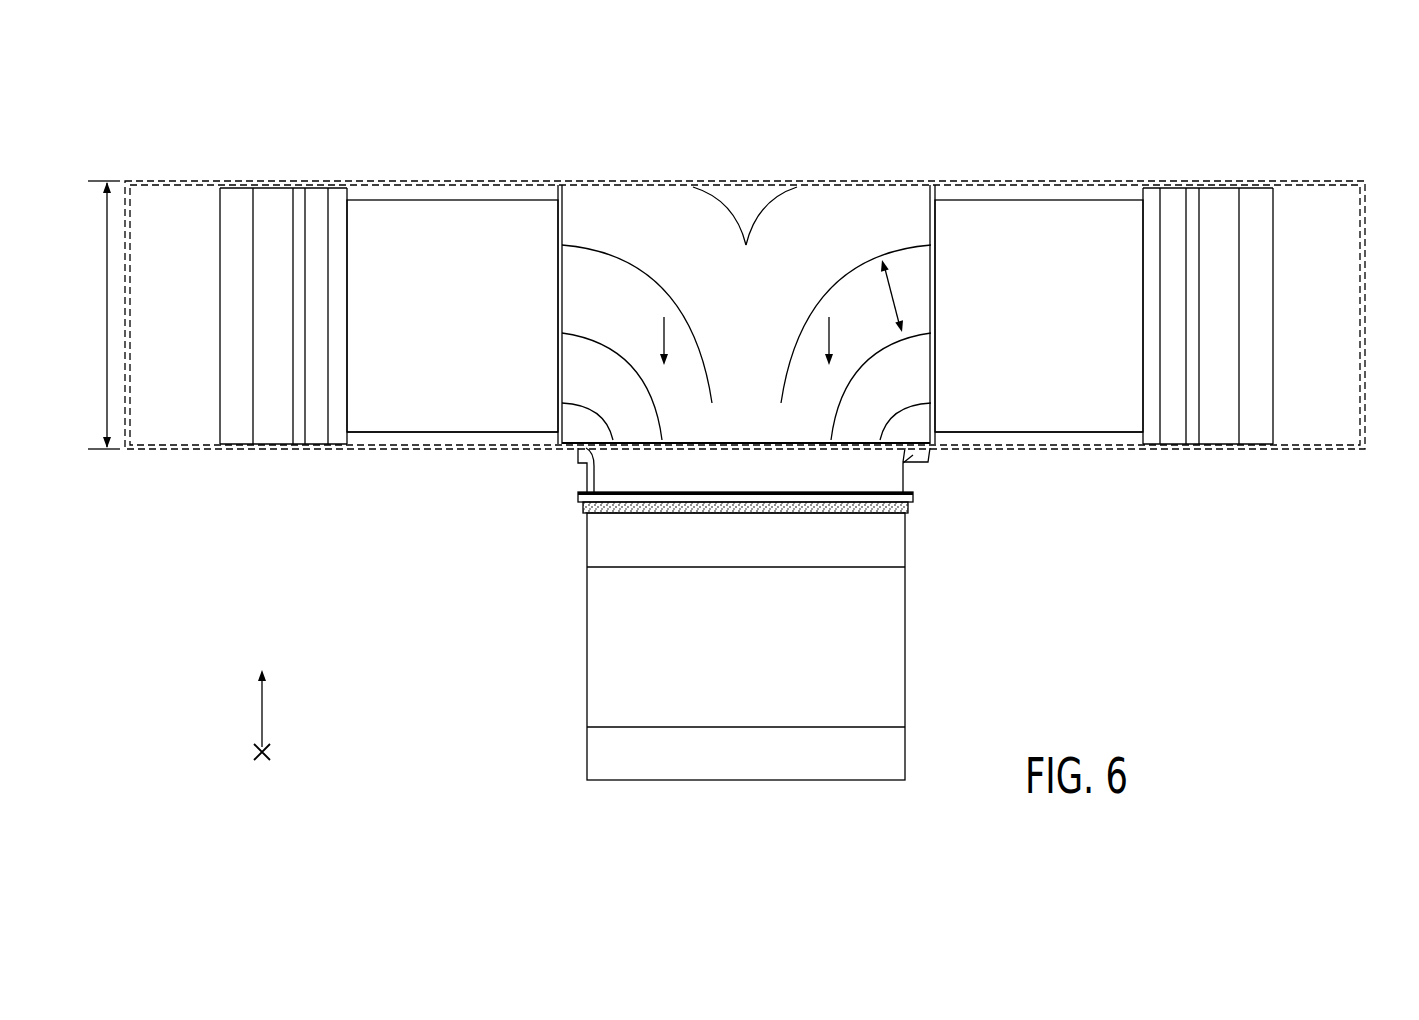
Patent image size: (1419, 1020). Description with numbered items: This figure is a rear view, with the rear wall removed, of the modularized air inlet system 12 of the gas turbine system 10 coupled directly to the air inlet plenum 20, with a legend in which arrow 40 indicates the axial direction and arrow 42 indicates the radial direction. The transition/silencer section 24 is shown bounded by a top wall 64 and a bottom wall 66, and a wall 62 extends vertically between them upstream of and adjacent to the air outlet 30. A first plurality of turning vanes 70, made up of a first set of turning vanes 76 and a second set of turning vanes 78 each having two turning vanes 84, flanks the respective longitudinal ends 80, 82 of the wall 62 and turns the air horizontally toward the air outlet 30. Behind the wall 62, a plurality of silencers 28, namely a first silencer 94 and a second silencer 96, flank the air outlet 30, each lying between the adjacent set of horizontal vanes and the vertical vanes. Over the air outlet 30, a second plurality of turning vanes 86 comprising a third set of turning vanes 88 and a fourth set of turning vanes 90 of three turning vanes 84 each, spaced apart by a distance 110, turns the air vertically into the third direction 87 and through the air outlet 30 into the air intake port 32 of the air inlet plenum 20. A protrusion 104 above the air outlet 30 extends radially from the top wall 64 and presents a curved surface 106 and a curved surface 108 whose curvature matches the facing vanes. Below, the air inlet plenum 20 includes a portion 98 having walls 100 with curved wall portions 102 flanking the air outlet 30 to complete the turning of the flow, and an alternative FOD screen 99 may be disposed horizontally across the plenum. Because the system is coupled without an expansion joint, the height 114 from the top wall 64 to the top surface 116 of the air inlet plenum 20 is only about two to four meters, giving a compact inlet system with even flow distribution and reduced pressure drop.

The gas turbine system 10 is at (745, 254).
The modularized air inlet system 12 is at (724, 267).
The air inlet plenum 20 is at (905, 672).
The transition/silencer section 24 is at (1367, 315).
The silencers 28 is at (745, 496).
The air outlet 30 is at (744, 393).
The air intake port 32 is at (725, 517).
The axial axis 40 is at (259, 762).
The radial axis 42 is at (262, 717).
The wall 62 is at (470, 185).
The top wall 64 is at (1208, 187).
The bottom wall 66 is at (1200, 448).
The first plurality of turning vanes 70 is at (747, 272).
The first set of turning vanes 76 is at (1278, 272).
The second set of turning vanes 78 is at (214, 278).
The longitudinal end of wall 80 is at (1145, 230).
The longitudinal end of wall 82 is at (345, 230).
The turning vanes 84 is at (582, 243).
The second plurality of turning vanes 86 is at (746, 259).
The third direction 87 is at (664, 337).
The third set of turning vanes 88 is at (840, 259).
The fourth set of turning vanes 90 is at (651, 278).
The first silencer 94 is at (1045, 432).
The second silencer 96 is at (447, 432).
The portion of air inlet plenum 98 is at (912, 465).
The FOD screen 99 is at (673, 503).
The walls 100 is at (905, 462).
The curved wall portion 102 is at (535, 489).
The protrusion 104 is at (768, 197).
The curved surface 106 is at (757, 217).
The curved surface 108 is at (732, 203).
The distance 110 is at (893, 292).
The height 114 is at (112, 314).
The top surface of air inlet plenum 116 is at (915, 458).